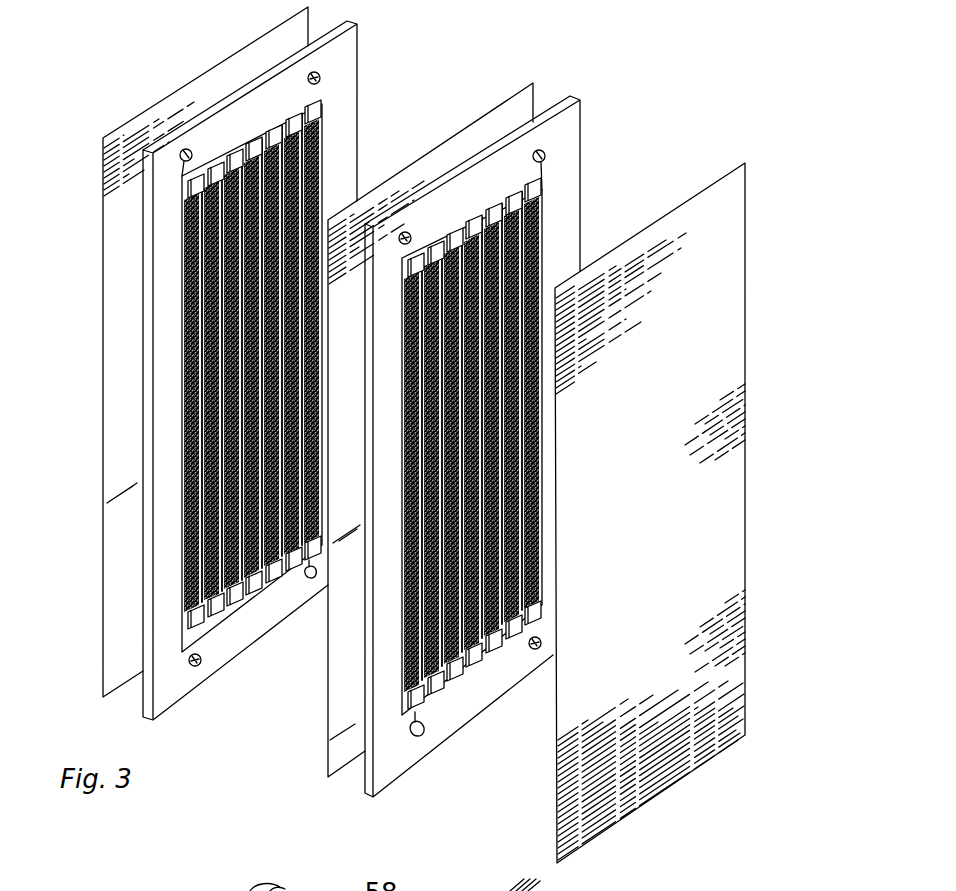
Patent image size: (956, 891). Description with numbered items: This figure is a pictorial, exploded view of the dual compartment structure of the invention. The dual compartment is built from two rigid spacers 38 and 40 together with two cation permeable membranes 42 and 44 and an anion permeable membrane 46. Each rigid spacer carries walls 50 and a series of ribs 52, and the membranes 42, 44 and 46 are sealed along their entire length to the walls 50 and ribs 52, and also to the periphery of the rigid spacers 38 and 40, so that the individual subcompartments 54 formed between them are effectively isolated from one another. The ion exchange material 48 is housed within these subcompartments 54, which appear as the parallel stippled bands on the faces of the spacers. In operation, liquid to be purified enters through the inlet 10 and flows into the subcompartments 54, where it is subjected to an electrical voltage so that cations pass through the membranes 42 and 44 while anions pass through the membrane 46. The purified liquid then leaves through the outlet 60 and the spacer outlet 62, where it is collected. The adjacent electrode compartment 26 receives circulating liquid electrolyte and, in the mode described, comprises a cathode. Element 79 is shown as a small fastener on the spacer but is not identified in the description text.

The inlet 10 is at (183, 150).
The electrode compartment 26 is at (333, 727).
The rigid spacer 38 is at (230, 382).
The rigid spacer 40 is at (562, 181).
The cation permeable membrane 42 is at (256, 58).
The cation permeable membrane 44 is at (674, 306).
The anion permeable membrane 46 is at (471, 131).
The ion exchange material 48 is at (190, 491).
The wall 50 is at (345, 161).
The rib 52 is at (223, 260).
The subcompartment 54 is at (233, 376).
The outlet 60 is at (260, 579).
The spacer outlet 62 is at (307, 581).
The screw 79 is at (323, 75).